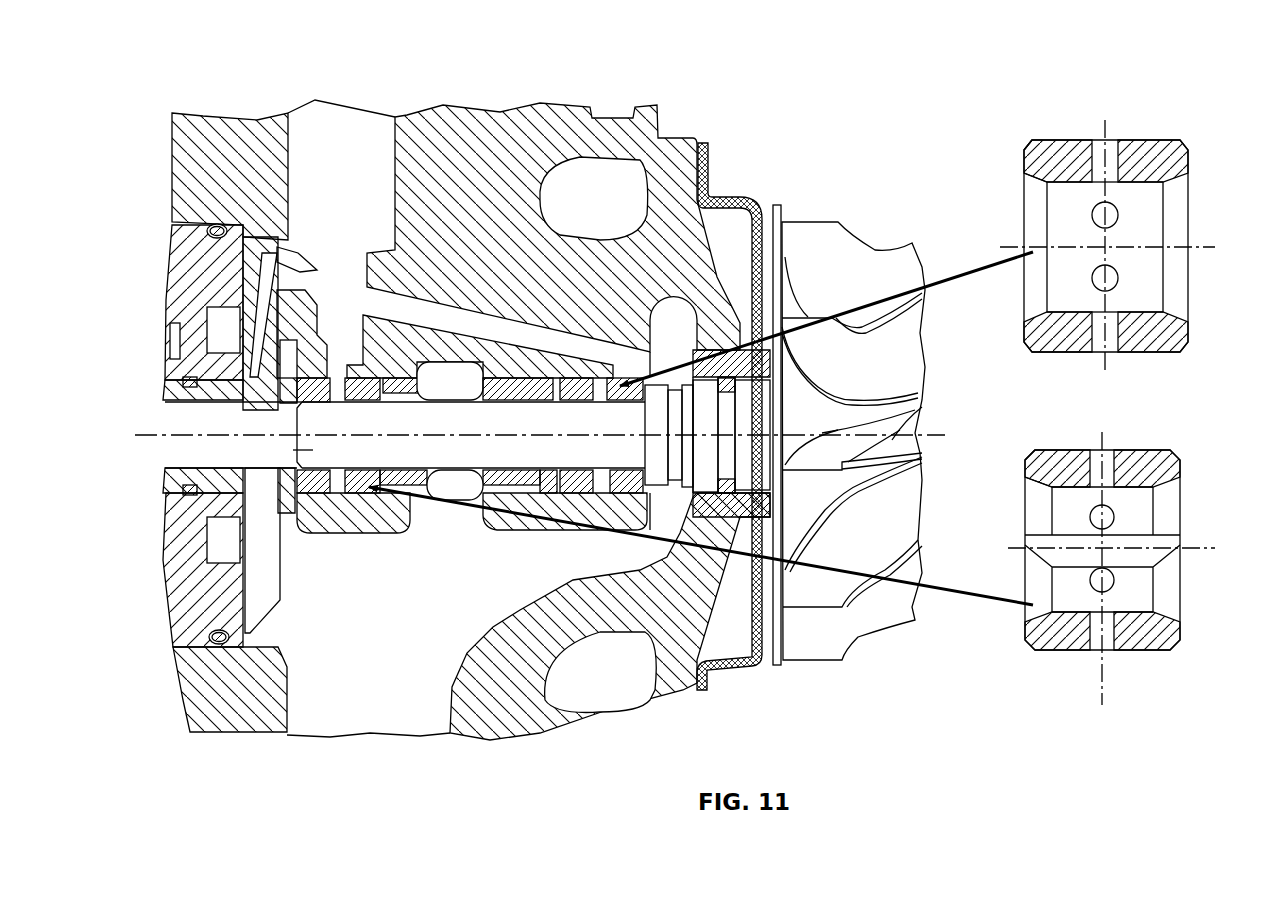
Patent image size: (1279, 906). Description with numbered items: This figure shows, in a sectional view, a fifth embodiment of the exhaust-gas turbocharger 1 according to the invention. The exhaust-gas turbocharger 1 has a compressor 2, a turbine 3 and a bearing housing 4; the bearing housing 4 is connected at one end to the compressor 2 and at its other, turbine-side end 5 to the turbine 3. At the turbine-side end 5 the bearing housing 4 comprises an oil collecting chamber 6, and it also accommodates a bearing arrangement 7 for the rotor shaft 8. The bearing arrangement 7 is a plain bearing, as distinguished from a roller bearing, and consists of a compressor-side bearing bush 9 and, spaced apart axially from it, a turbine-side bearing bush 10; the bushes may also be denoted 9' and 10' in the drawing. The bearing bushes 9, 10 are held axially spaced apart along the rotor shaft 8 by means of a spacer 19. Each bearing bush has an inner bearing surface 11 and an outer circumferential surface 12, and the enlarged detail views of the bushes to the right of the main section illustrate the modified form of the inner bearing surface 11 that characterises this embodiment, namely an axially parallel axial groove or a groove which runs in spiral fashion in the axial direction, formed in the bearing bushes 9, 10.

The exhaust-gas turbocharger 1 is at (518, 100).
The compressor 2 is at (185, 266).
The turbine 3 is at (860, 213).
The bearing housing 4 is at (699, 136).
The turbine-side end 5 is at (765, 198).
The oil collecting chamber 6 is at (670, 347).
The bearing arrangement 7 is at (576, 504).
The rotor shaft 8 is at (313, 450).
The compressor-side bearing bush 9 is at (684, 568).
The bearing bush (upper) 9' is at (339, 219).
The turbine-side bearing bush 10 is at (926, 413).
The bearing bush 10' is at (654, 238).
The inner bearing surface 11 is at (1152, 191).
The outer circumferential surface 12 is at (1058, 138).
The spacer 19 is at (409, 365).